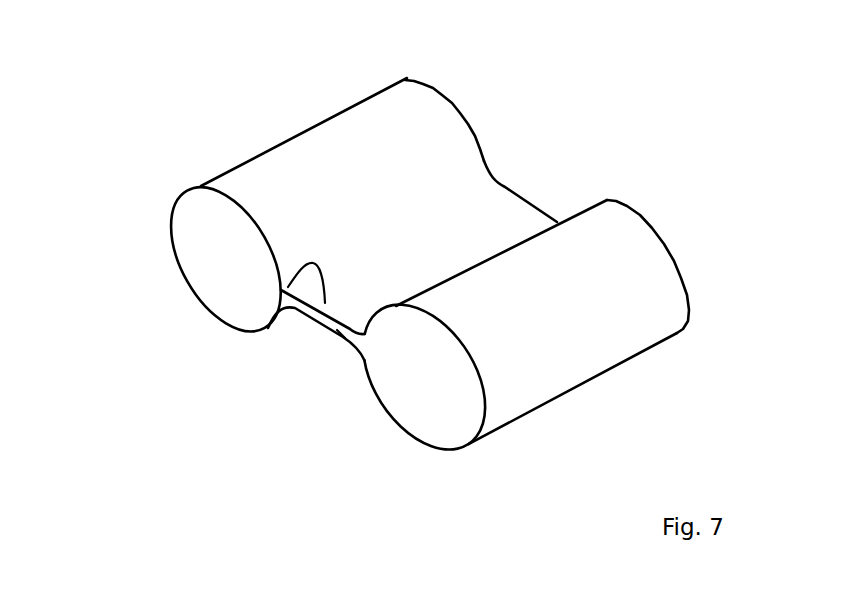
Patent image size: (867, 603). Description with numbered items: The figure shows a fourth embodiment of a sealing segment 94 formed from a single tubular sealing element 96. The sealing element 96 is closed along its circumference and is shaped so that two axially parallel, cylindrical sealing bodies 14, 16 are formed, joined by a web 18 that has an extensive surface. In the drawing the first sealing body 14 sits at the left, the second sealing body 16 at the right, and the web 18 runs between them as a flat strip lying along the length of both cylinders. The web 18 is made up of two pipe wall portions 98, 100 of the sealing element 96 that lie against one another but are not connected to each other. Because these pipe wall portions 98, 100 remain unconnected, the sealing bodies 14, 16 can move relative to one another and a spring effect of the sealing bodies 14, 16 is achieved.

The sealing segment 94 is at (62, 53).
The cylindrical sealing body 14 is at (402, 118).
The cylindrical sealing body 16 is at (613, 262).
The web 18 is at (492, 225).
The tubular sealing element 96 is at (510, 167).
The pipe wall portion 98 is at (288, 287).
The pipe wall portion 100 is at (337, 330).